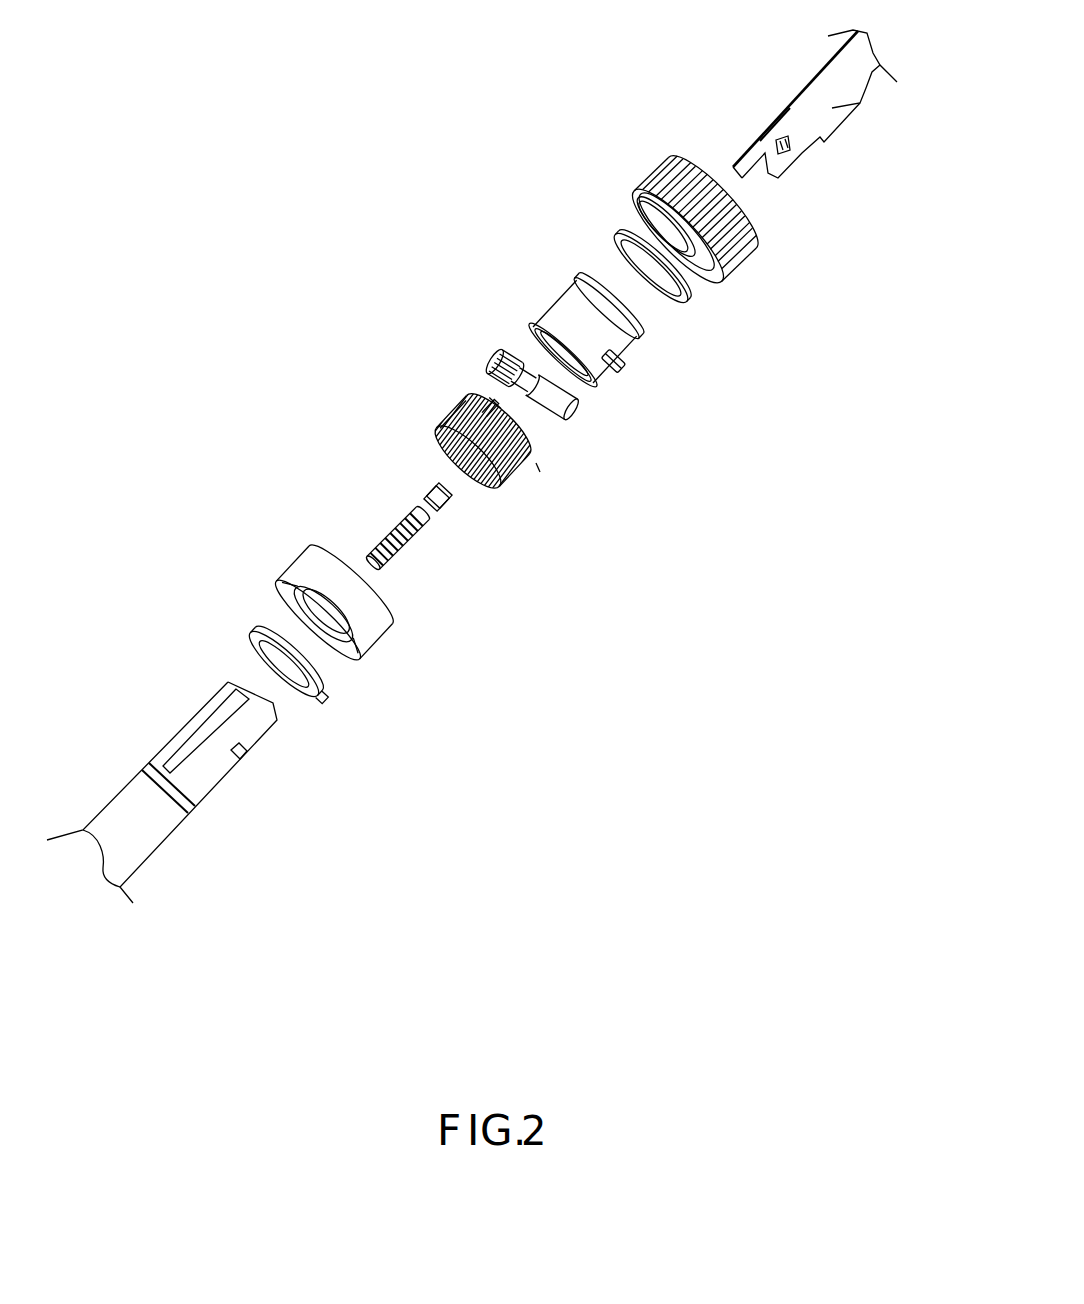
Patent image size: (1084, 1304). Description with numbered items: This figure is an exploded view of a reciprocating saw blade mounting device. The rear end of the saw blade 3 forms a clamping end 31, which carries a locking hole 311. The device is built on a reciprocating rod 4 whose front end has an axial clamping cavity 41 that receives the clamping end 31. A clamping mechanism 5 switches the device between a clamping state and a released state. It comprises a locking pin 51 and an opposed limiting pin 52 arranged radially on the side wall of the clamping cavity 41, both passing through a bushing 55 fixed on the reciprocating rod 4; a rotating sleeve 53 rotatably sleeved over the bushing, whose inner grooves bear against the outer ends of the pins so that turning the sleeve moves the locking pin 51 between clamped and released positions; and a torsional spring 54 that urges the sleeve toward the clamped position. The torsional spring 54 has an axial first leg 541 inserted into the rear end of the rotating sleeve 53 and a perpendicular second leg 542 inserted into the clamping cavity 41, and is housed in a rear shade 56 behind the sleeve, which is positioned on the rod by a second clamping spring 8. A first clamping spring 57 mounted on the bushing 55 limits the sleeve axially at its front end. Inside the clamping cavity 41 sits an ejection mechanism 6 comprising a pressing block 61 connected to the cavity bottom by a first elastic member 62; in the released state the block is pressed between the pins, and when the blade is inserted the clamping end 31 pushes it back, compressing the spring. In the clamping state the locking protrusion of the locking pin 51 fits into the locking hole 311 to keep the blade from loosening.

The saw blade 3 is at (860, 103).
The clamping end 31 is at (777, 123).
The locking hole 311 is at (793, 153).
The reciprocating rod 4 is at (187, 778).
The clamping cavity 41 is at (229, 680).
The clamping mechanism 5 is at (847, 330).
The locking pin 51 is at (535, 468).
The limiting pin 52 is at (575, 405).
The rotating sleeve 53 is at (757, 252).
The torsional spring 54 is at (518, 490).
The first leg 541 is at (482, 393).
The second leg 542 is at (440, 423).
The bushing 55 is at (622, 349).
The rear shade 56 is at (363, 613).
The first clamping spring 57 is at (690, 300).
The ejection mechanism 6 is at (275, 388).
The pressing block 61 is at (435, 480).
The first elastic member 62 is at (393, 530).
The second clamping spring 8 is at (313, 667).